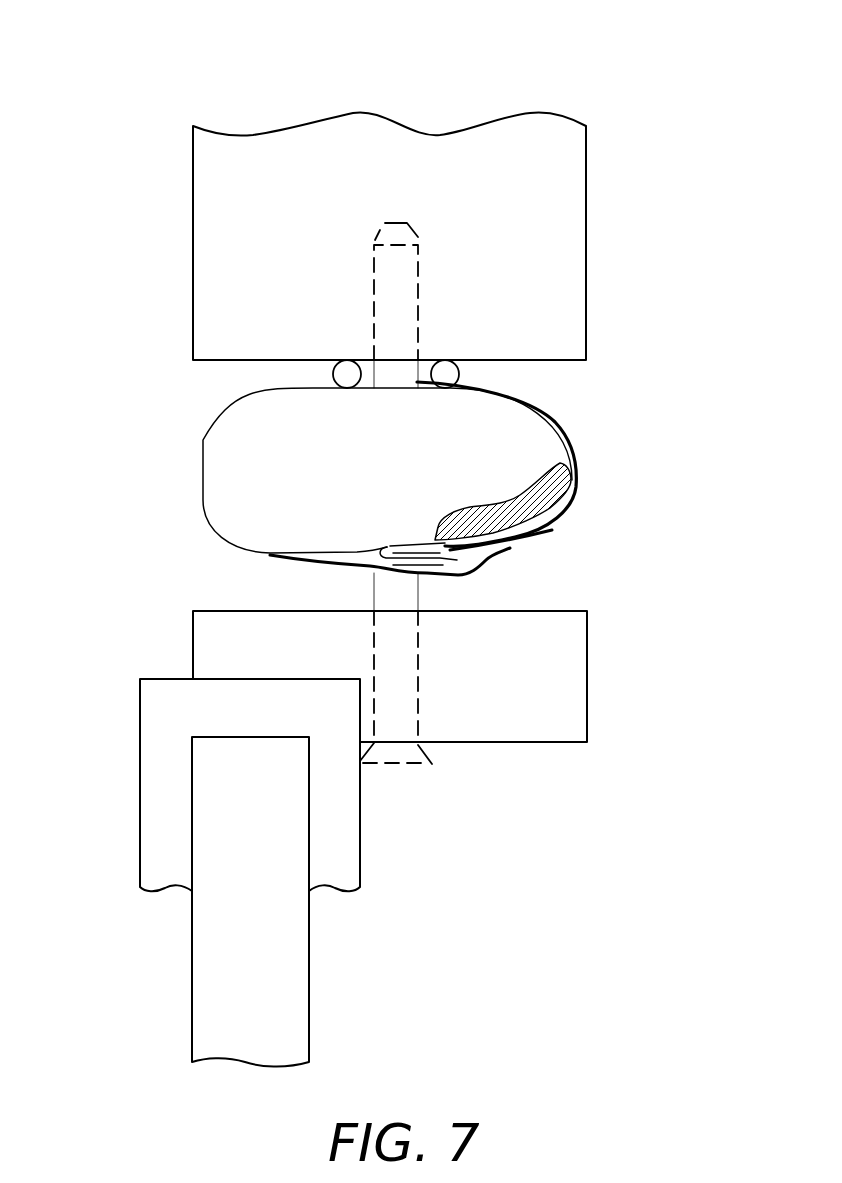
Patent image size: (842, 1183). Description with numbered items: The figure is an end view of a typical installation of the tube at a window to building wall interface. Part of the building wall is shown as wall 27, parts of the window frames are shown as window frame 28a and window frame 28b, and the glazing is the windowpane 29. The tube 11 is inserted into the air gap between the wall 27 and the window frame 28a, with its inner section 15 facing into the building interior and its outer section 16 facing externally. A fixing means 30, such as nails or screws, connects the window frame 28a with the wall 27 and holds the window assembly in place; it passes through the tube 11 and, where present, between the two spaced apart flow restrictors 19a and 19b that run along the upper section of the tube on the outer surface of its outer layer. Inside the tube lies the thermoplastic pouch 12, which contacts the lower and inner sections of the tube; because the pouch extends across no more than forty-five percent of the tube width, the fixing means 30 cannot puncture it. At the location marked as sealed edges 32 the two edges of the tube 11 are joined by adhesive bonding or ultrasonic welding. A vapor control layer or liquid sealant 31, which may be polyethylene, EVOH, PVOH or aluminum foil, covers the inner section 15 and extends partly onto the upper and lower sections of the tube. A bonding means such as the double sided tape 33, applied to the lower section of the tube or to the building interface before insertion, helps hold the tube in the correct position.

The building wall 27 is at (375, 132).
The fixing means 30 is at (410, 290).
The flow restrictor 19a is at (333, 381).
The flow restrictor 19b is at (460, 381).
The outer section 16 is at (143, 400).
The inner section 15 is at (710, 402).
The vapor control layer 31 is at (560, 424).
The tube 11 is at (570, 463).
The pouch 12 is at (547, 493).
The sealed edges 32 is at (443, 560).
The double sided tape 33 is at (540, 538).
The window frame 28a is at (563, 692).
The window frame 28b is at (158, 817).
The windowpane 29 is at (283, 983).